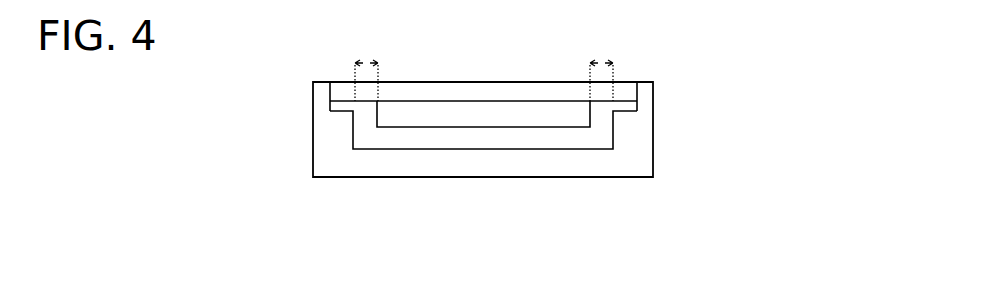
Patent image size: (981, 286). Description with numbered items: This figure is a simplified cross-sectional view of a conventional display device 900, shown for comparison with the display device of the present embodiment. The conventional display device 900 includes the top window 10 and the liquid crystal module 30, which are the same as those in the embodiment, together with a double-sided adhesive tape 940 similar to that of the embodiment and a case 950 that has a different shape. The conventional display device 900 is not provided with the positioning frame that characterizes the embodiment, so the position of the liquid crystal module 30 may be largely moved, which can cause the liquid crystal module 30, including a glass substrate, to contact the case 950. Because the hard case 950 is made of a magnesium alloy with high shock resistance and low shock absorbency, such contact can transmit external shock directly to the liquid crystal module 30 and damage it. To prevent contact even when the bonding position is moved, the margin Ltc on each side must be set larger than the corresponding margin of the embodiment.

The conventional display device 900 is at (496, 115).
The case 950 is at (313, 82).
The double-sided adhesive tape 940 is at (331, 117).
The top window 10 is at (476, 90).
The liquid crystal module 30 is at (477, 122).
The margin Ltc is at (480, 66).